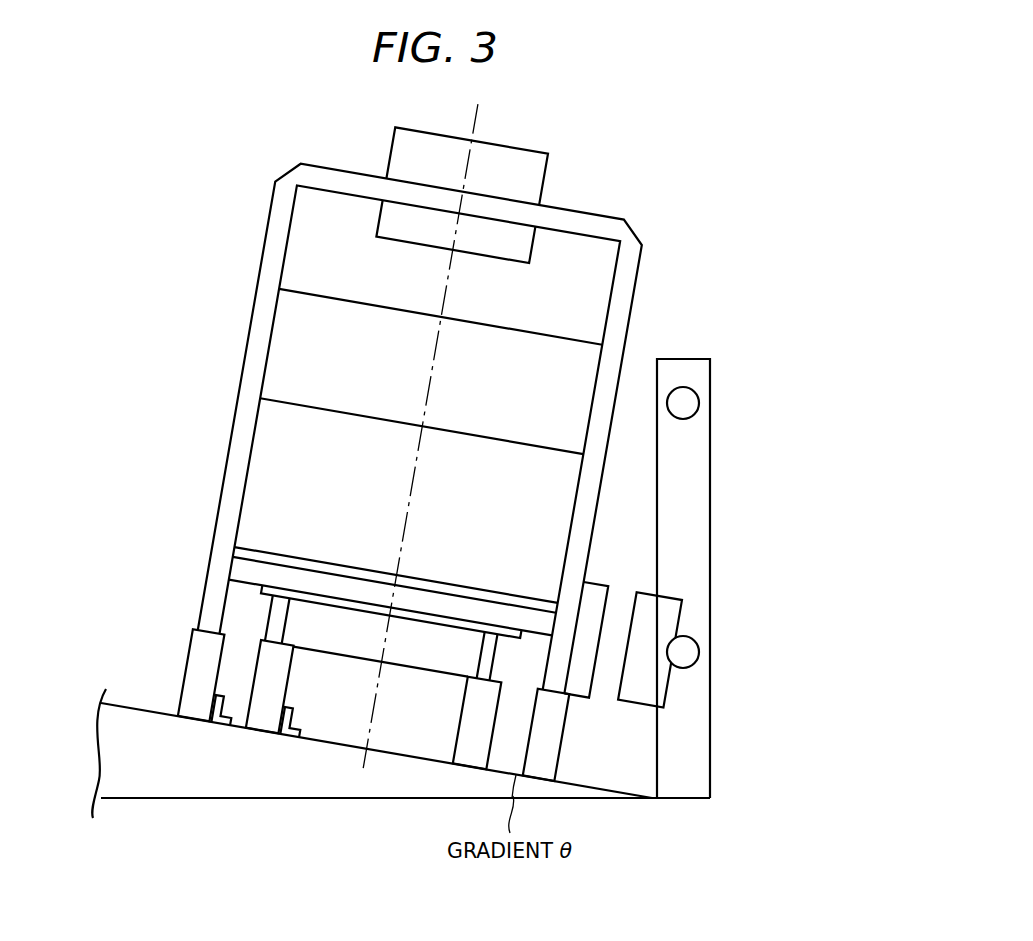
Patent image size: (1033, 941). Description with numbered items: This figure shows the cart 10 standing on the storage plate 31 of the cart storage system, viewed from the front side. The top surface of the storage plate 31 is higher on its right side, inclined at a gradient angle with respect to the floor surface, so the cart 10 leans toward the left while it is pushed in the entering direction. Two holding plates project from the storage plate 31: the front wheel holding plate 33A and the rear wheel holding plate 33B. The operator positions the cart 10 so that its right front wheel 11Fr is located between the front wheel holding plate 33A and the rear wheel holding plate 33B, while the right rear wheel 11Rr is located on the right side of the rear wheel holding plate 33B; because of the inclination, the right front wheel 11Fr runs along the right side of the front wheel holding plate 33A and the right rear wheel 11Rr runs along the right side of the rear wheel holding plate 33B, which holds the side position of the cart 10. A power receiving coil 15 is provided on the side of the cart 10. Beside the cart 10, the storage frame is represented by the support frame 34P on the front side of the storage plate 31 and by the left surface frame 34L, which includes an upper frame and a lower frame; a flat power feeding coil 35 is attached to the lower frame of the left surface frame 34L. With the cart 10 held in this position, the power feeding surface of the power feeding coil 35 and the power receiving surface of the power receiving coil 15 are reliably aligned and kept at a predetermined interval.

The cart 10 is at (246, 285).
The right front wheel 11Fr is at (262, 647).
The right rear wheel 11Rr is at (190, 647).
The power receiving coil 15 is at (598, 595).
The storage plate 31 is at (135, 703).
The front wheel holding plate 33A is at (284, 733).
The rear wheel holding plate 33B is at (215, 722).
The left surface frame 34L is at (700, 402).
The support frame 34P is at (685, 790).
The power feeding coil 35 is at (639, 692).